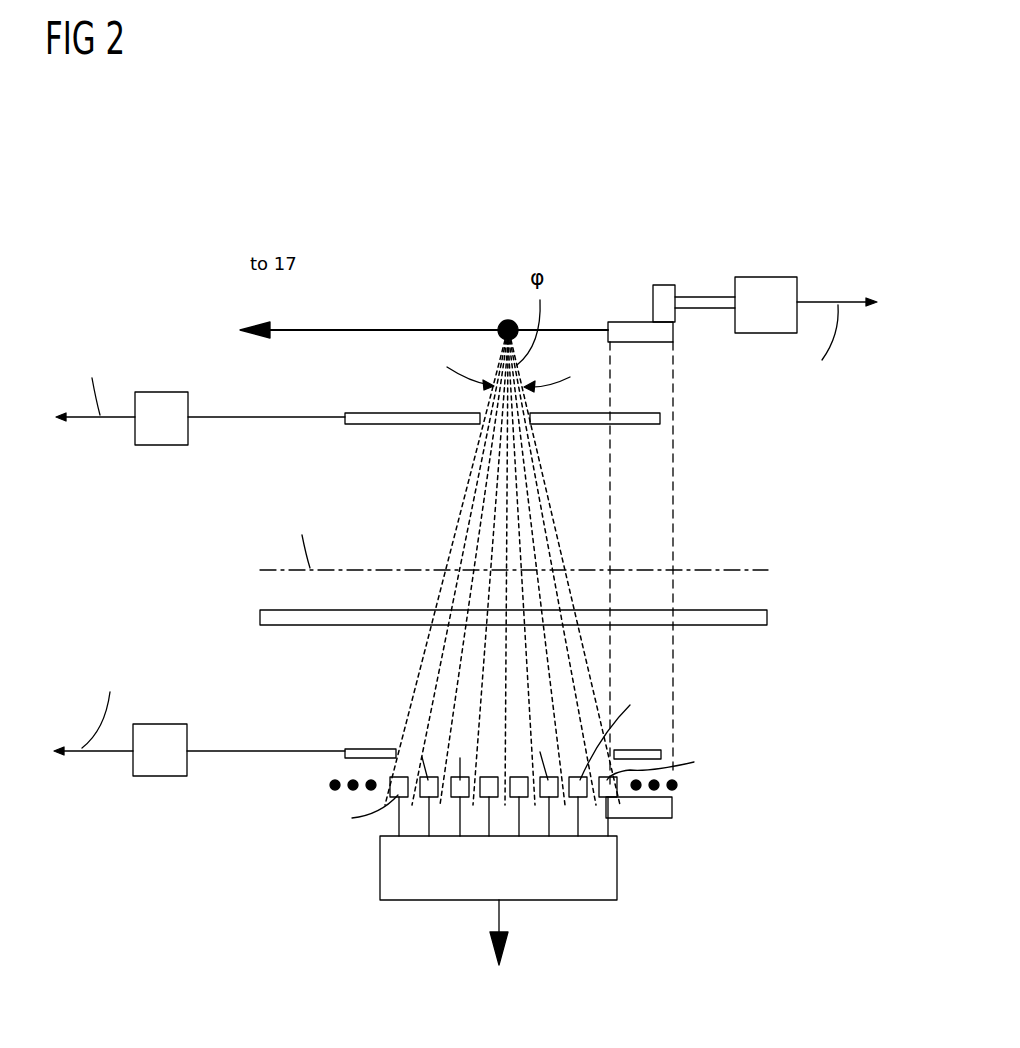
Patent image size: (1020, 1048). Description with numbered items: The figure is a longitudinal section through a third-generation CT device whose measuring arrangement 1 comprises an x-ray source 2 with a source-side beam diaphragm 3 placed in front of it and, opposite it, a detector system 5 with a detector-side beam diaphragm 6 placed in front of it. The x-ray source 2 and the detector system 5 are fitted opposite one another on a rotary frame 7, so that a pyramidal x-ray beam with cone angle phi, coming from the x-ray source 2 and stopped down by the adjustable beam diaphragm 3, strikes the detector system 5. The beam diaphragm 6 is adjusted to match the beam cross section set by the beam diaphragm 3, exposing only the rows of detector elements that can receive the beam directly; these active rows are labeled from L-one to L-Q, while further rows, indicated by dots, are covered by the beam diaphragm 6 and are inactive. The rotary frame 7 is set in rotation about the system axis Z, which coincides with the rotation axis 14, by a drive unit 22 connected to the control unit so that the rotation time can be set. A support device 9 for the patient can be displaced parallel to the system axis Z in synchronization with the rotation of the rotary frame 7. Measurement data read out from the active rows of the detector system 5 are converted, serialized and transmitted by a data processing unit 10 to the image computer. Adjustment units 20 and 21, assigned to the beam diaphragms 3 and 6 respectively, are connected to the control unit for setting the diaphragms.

The measuring arrangement 1 is at (670, 224).
The x-ray source 2 is at (503, 323).
The source-side beam diaphragm 3 is at (372, 415).
The detector system 5 is at (738, 696).
The detector-side beam diaphragm 6 is at (367, 750).
The rotary frame 7 is at (628, 334).
The support device 9 is at (330, 622).
The data processing unit 10 is at (597, 860).
The rotation axis 14 is at (722, 570).
The adjustment unit 20 is at (160, 432).
The adjustment unit 21 is at (162, 766).
The drive unit 22 is at (763, 290).